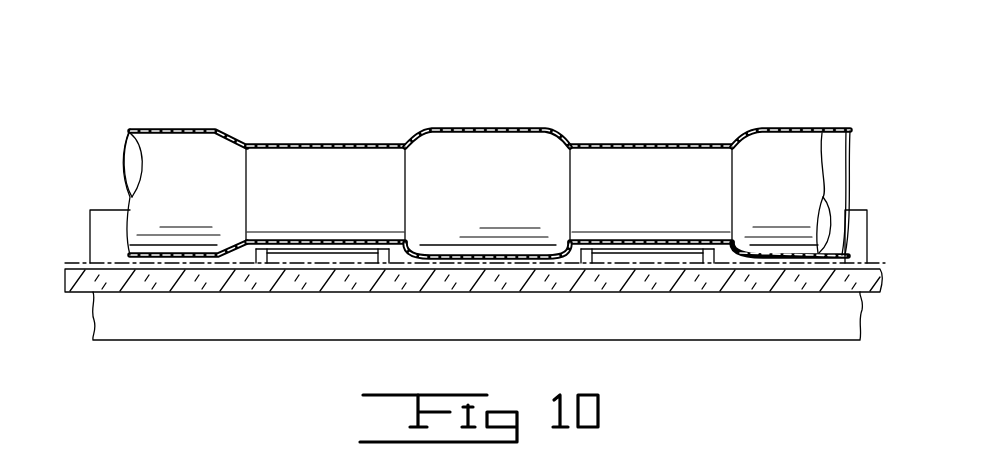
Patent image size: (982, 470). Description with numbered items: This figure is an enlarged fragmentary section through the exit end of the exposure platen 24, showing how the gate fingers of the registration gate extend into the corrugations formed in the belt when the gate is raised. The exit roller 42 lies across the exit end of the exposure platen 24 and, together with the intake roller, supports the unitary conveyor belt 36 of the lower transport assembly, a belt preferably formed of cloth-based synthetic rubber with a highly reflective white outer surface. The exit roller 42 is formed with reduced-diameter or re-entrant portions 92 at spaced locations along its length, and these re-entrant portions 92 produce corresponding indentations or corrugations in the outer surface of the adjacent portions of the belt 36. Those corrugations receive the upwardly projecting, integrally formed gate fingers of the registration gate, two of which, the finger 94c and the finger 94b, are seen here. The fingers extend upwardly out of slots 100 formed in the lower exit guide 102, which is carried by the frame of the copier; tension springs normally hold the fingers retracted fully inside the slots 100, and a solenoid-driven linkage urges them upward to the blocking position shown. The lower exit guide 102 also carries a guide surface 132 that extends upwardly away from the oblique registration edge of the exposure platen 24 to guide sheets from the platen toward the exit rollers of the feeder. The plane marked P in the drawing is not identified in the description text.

The re-entrant portions 92 is at (318, 157).
The exit roller 42 is at (470, 147).
The conveyor belt 36 is at (793, 130).
The gate finger 94c is at (335, 253).
The gate finger 94b is at (632, 249).
The slots 100 is at (262, 249).
The lower exit guide 102 is at (93, 220).
The guide surface 132 is at (860, 208).
The reference plane P is at (871, 262).
The exposure platen 24 is at (507, 292).